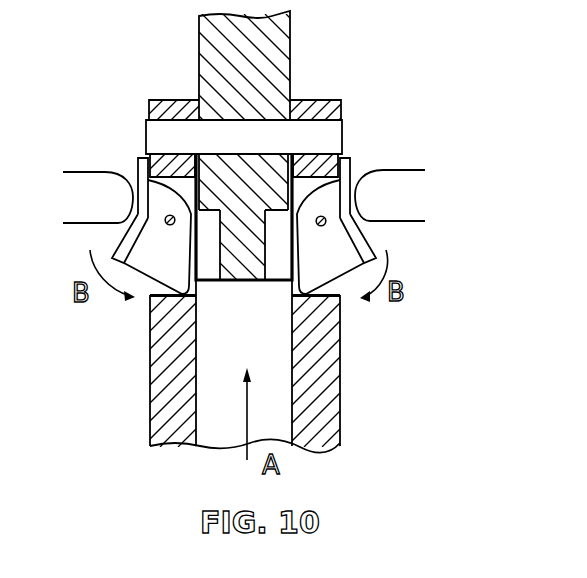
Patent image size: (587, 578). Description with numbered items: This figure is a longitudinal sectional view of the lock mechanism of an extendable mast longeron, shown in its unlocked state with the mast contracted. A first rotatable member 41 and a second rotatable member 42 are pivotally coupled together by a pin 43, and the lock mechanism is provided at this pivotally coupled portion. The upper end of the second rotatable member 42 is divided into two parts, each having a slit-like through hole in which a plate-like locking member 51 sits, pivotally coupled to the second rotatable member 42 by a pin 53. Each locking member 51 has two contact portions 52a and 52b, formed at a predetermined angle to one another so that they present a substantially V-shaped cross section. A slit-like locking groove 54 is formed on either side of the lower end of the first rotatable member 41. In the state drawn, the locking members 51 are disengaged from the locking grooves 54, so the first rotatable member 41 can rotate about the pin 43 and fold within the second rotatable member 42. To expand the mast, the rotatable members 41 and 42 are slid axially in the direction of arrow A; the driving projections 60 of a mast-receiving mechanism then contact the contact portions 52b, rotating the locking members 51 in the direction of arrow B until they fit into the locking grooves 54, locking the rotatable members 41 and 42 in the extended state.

The first rotatable member 41 is at (291, 57).
The second rotatable member 42 is at (341, 403).
The pin 43 is at (343, 134).
The locking member 51 is at (344, 265).
The contact portion 52a is at (352, 172).
The contact portion 52b is at (378, 256).
The pin 53 is at (400, 245).
The locking groove 54 is at (212, 267).
The driving projection 60 is at (413, 169).